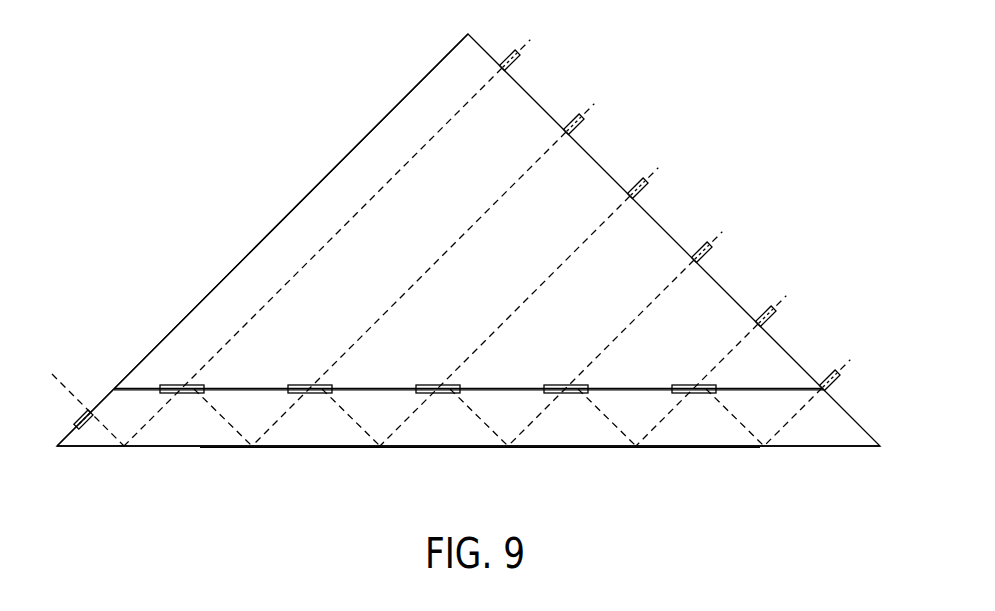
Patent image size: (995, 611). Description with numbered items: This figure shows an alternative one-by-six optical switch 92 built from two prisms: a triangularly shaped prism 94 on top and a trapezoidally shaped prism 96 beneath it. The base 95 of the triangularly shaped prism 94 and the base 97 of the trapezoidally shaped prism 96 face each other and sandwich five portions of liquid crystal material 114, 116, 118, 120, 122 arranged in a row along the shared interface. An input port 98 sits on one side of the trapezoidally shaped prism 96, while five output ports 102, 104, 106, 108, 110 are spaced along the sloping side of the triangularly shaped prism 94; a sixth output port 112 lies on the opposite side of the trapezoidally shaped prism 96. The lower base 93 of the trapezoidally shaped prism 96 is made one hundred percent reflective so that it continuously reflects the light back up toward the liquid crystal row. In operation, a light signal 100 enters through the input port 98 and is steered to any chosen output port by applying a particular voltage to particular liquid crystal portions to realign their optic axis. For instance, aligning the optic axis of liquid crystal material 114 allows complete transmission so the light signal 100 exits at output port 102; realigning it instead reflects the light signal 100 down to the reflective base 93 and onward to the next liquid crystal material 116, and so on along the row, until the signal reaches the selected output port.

The switch 92 is at (268, 120).
The base 93 is at (289, 446).
The triangularly shaped prism 94 is at (227, 292).
The base 95 is at (272, 388).
The trapezoidally shaped prism 96 is at (193, 447).
The base 97 is at (270, 390).
The input port 98 is at (85, 400).
The light signal 100 is at (76, 368).
The output port 102 is at (518, 60).
The output port 104 is at (584, 124).
The output port 106 is at (648, 188).
The output port 108 is at (712, 250).
The output port 110 is at (776, 316).
The output coupler 112 is at (840, 385).
The liquid crystal material 114 is at (200, 385).
The liquid crystal material 116 is at (332, 385).
The liquid crystal material 118 is at (460, 385).
The liquid crystal material 120 is at (588, 385).
The liquid crystal material 122 is at (716, 385).